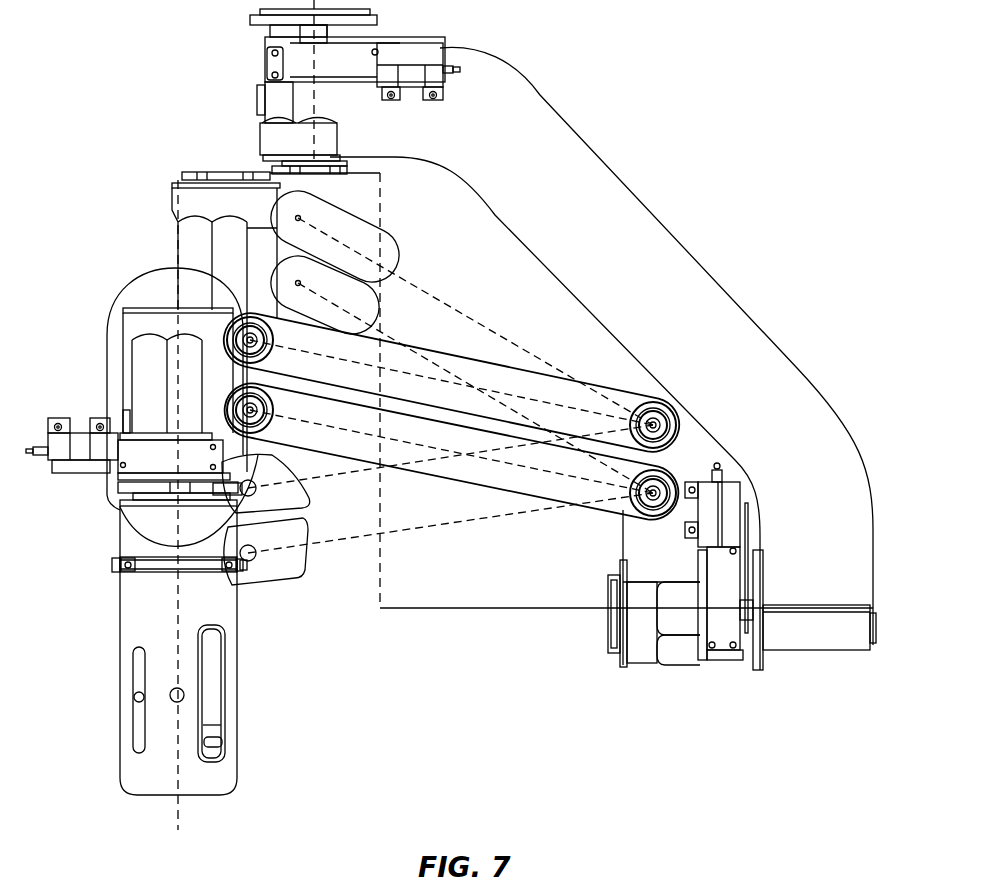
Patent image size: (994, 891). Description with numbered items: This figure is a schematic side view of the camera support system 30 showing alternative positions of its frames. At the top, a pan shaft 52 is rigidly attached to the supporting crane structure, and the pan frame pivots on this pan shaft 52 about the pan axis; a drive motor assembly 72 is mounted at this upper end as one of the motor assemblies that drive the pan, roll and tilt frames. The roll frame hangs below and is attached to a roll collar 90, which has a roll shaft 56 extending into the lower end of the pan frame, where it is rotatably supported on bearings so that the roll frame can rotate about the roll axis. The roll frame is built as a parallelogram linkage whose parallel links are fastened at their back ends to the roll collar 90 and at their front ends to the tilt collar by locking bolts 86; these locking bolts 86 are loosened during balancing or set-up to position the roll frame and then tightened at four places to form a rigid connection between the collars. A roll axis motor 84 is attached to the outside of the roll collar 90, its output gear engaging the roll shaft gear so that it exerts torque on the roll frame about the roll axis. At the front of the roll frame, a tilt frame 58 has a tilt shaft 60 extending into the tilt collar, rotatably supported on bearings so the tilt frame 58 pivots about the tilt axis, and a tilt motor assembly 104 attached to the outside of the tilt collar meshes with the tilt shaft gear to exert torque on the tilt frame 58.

The support system 30 is at (717, 184).
The pan shaft 52 is at (592, 182).
The roll shaft 56 is at (607, 619).
The tilt frame 58 is at (118, 537).
The tilt shaft 60 is at (192, 172).
The drive motor assembly 72 is at (430, 64).
The second roll axis motor 84 is at (726, 567).
The locking bolts 86 is at (662, 423).
The roll collar 90 is at (637, 535).
The first tilt motor assembly 104 is at (80, 437).